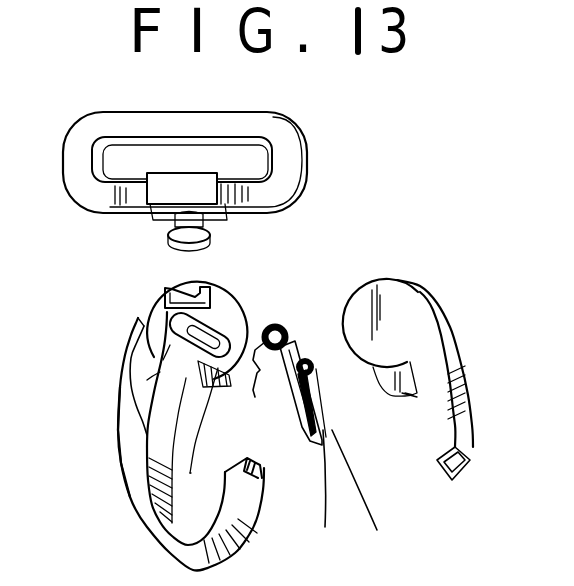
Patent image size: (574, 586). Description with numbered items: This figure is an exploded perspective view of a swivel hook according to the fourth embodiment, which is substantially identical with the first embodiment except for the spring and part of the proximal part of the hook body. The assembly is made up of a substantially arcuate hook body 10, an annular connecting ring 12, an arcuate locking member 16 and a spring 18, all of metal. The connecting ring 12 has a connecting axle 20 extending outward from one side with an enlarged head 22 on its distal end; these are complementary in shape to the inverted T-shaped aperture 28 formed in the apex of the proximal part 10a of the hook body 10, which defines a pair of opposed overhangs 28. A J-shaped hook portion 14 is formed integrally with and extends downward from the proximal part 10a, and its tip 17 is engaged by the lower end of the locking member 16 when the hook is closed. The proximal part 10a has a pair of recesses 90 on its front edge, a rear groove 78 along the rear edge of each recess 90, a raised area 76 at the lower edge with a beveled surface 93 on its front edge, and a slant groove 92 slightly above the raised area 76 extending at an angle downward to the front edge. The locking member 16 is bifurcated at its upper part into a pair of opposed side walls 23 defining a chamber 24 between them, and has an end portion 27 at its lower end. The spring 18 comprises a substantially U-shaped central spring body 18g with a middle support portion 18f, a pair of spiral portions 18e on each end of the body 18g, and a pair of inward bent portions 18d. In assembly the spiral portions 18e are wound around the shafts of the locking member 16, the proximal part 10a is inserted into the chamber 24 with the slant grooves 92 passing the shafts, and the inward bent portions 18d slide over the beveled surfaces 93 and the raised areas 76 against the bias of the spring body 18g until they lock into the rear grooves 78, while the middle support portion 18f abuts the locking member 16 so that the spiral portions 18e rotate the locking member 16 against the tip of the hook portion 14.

The hook body 10 is at (118, 482).
The proximal part 10a is at (183, 477).
The connecting ring 12 is at (312, 124).
The J-shaped hook portion 14 is at (147, 523).
The locking member 16 is at (462, 331).
The hook tip 17 is at (262, 462).
The spring 18 is at (302, 327).
The inward bent portion 18d is at (236, 400).
The spiral portion 18e is at (318, 363).
The middle support portion 18f is at (306, 536).
The U-shaped central spring body 18g is at (370, 536).
The connecting axle 20 is at (205, 222).
The enlarged head 22 is at (187, 243).
The side wall 23 is at (402, 393).
The chamber 24 is at (413, 395).
The end block 27 is at (476, 451).
The inverted T-shaped aperture 28 is at (200, 290).
The raised area 76 is at (163, 360).
The rear groove 78 is at (157, 337).
The recess 90 is at (200, 362).
The slant groove 92 is at (205, 325).
The beveled surface 93 is at (175, 355).